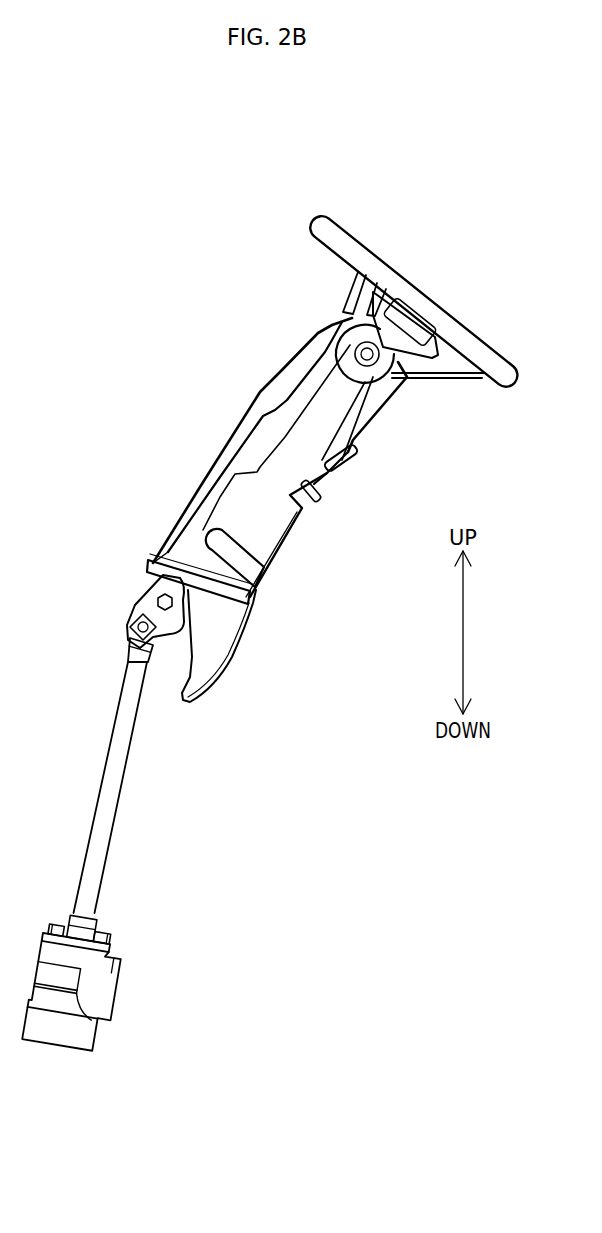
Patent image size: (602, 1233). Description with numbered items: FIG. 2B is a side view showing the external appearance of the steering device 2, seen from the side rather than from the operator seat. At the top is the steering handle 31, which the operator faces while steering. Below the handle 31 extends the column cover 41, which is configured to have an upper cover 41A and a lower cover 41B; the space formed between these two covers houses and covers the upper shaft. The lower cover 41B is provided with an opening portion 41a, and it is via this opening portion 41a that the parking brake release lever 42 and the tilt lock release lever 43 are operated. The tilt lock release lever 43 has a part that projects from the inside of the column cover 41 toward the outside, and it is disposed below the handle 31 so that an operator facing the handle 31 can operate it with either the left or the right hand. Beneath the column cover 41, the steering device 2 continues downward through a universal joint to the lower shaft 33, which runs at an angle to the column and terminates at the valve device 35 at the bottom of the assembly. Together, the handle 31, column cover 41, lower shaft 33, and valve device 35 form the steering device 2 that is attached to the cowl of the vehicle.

The steering device 2 is at (198, 165).
The steering handle 31 is at (423, 301).
The lower shaft 33 is at (110, 802).
The valve device 35 is at (112, 977).
The column cover 41 is at (278, 372).
The upper cover 41A is at (191, 511).
The lower cover 41B is at (277, 558).
The opening portion 41a is at (345, 480).
The parking brake release lever 42 is at (348, 458).
The tilt lock release lever 43 is at (320, 497).